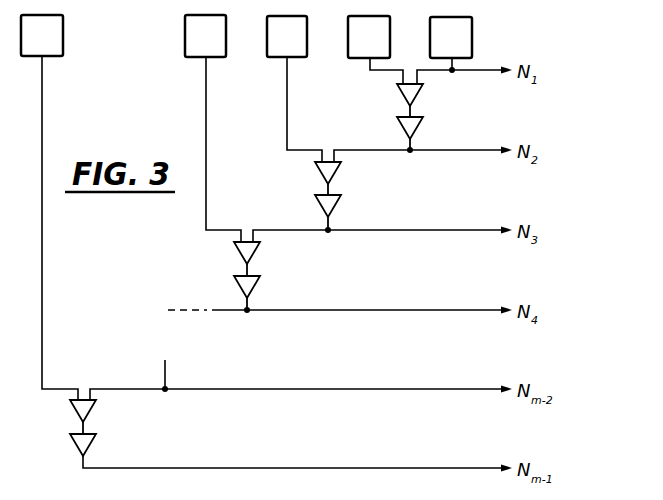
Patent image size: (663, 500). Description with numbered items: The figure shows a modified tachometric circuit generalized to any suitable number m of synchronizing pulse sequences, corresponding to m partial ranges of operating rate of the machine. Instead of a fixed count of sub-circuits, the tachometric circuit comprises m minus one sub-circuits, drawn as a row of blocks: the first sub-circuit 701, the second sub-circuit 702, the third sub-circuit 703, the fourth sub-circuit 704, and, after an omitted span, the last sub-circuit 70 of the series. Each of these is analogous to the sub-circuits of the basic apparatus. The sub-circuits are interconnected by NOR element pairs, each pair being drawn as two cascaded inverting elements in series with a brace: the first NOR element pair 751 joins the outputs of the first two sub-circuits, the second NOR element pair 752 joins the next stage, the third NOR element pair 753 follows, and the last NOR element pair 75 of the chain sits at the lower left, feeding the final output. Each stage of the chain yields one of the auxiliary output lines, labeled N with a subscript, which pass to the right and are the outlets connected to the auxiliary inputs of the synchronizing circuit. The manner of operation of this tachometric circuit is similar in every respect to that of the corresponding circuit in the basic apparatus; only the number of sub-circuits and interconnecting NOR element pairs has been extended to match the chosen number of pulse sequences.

The tachometric sub-circuit 70 is at (42, 35).
The first tachometric sub-circuit 701 is at (451, 37).
The second tachometric sub-circuit 702 is at (369, 37).
The third tachometric sub-circuit 703 is at (287, 36).
The fourth tachometric sub-circuit 704 is at (205, 36).
The NOR element pair 75 is at (117, 402).
The first NOR element pair 751 is at (437, 85).
The second NOR element pair 752 is at (357, 163).
The third NOR element pair 753 is at (280, 245).